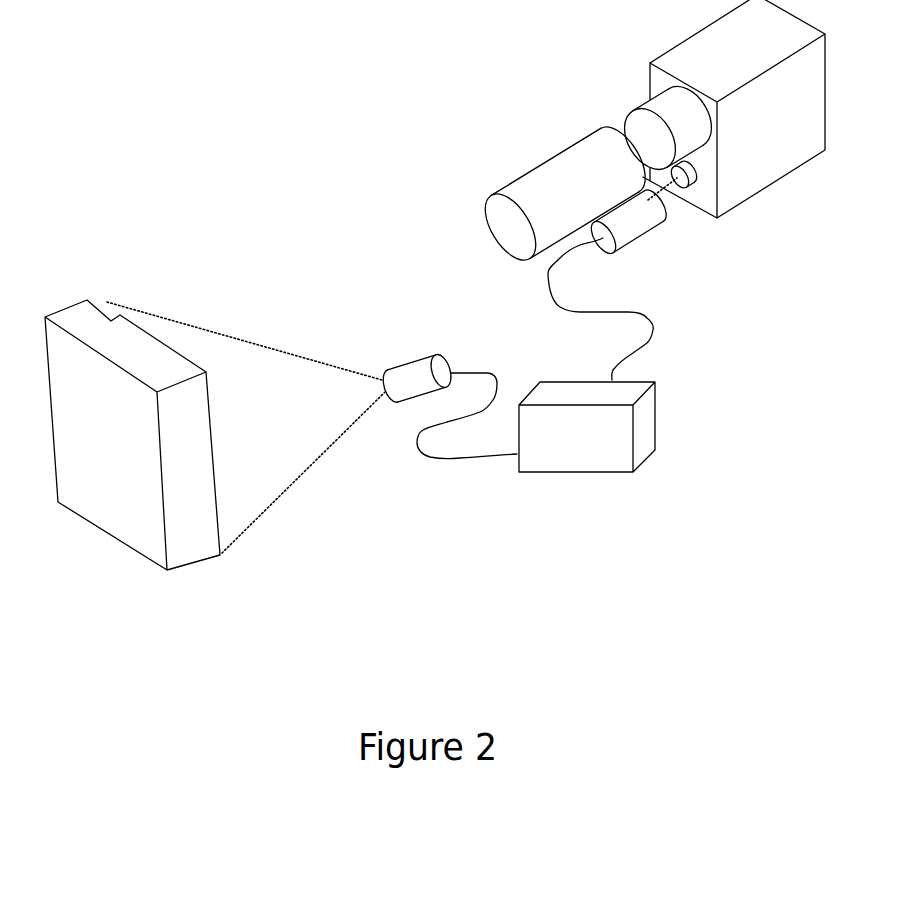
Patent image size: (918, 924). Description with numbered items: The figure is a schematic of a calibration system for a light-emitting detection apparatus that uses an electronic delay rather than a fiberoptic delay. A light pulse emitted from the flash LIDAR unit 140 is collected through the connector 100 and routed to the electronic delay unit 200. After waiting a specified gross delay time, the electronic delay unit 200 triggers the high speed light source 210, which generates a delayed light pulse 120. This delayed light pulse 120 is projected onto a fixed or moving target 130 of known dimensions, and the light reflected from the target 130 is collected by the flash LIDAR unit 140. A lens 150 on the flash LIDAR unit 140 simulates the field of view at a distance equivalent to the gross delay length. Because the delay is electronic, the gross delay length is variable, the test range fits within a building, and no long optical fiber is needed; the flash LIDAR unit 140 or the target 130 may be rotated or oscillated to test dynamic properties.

The connector 100 is at (633, 218).
The light pulse 120 is at (235, 478).
The target 130 is at (131, 467).
The flash LIDAR unit 140 is at (769, 57).
The lens 150 is at (592, 197).
The electronic delay unit 200 is at (594, 448).
The high speed light source 210 is at (400, 403).